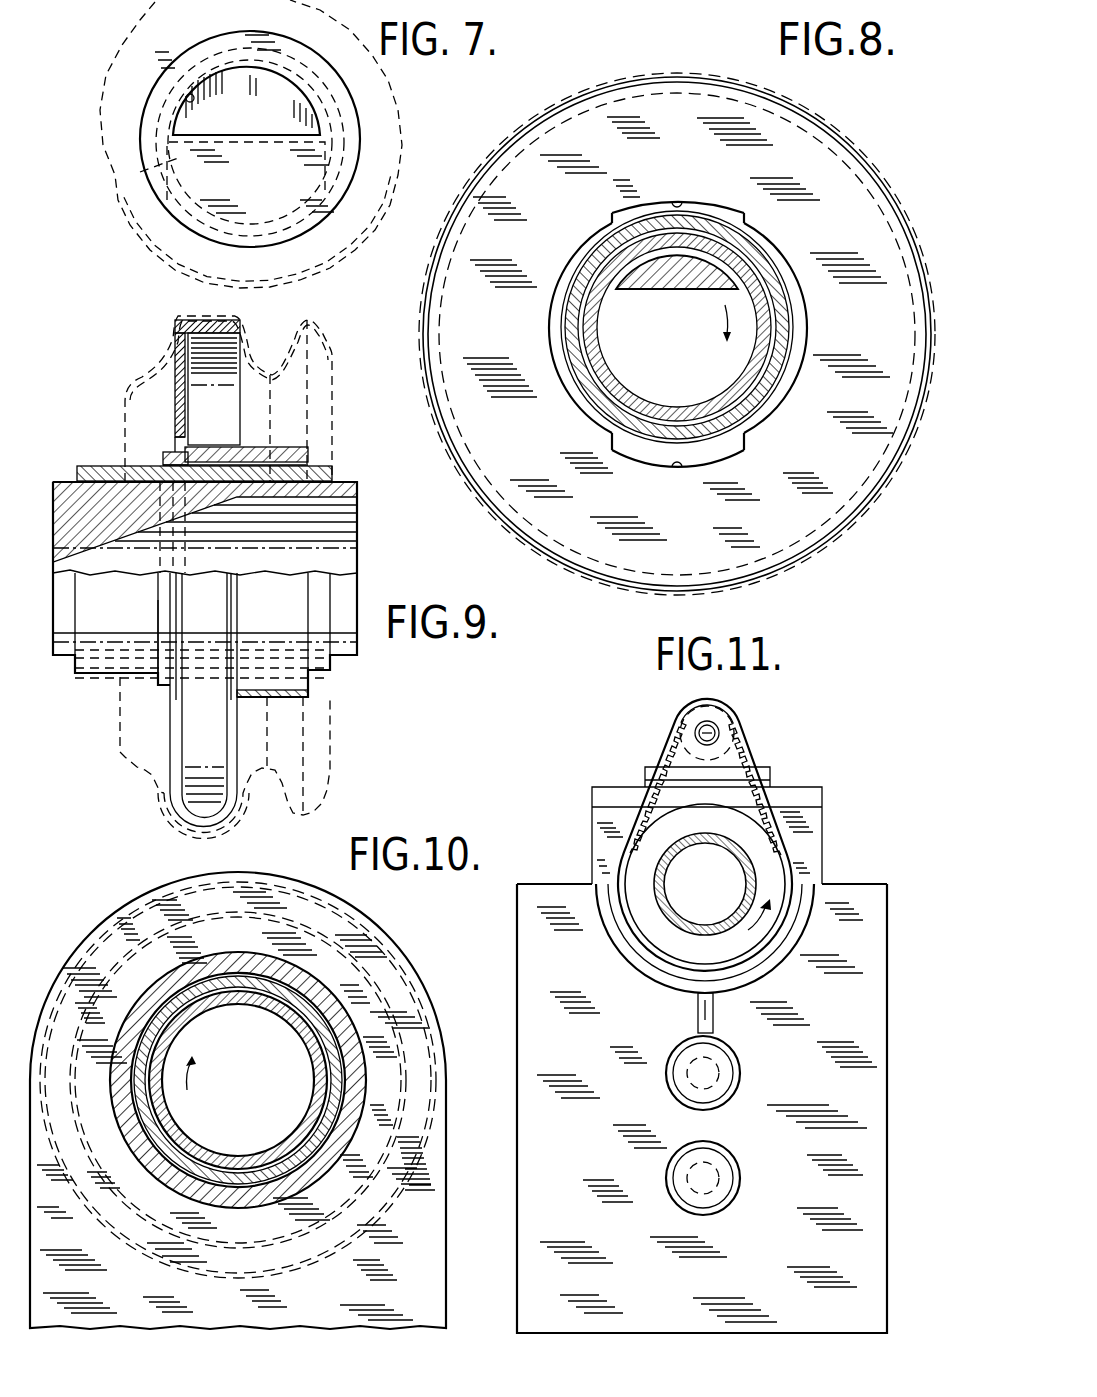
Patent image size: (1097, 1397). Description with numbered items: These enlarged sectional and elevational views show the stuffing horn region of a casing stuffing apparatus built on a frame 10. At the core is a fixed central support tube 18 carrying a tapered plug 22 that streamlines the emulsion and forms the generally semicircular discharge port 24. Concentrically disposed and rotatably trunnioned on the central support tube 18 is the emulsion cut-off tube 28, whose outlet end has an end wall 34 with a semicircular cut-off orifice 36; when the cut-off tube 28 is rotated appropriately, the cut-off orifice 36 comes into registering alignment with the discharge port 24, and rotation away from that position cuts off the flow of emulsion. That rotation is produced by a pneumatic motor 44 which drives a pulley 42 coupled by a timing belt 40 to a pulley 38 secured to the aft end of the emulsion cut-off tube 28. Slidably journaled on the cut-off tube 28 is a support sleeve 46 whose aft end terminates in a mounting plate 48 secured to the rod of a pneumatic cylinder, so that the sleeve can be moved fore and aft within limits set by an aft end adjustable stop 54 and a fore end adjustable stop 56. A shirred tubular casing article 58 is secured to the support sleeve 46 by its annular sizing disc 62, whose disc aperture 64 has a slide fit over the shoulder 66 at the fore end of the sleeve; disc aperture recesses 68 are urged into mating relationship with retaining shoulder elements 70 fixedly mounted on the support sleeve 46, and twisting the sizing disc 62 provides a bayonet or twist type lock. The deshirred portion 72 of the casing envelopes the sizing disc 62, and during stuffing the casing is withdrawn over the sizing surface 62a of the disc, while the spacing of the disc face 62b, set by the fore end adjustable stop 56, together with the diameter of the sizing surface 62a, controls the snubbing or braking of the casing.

In FIG. 11, the frame 10 is at (591, 1169).
In FIG. 7, the central support tube 18 is at (333, 168).
In FIG. 8, the central support tube 18 is at (668, 416).
In FIG. 9, the central support tube 18 is at (348, 490).
In FIG. 10, the central support tube 18 is at (313, 1051).
In FIG. 11, the central support tube 18 is at (662, 906).
In FIG. 7, the tapered plug 22 is at (258, 119).
In FIG. 8, the tapered plug 22 is at (668, 275).
In FIG. 9, the tapered plug 22 is at (207, 500).
In FIG. 7, the discharge port 24 is at (140, 172).
In FIG. 7, the emulsion cut-off tube 28 is at (177, 207).
In FIG. 8, the emulsion cut-off tube 28 is at (585, 268).
In FIG. 9, the emulsion cut-off tube 28 is at (330, 472).
In FIG. 10, the emulsion cut-off tube 28 is at (275, 1172).
In FIG. 7, the end wall 34 is at (258, 185).
In FIG. 7, the cut-off orifice 36 is at (187, 96).
In FIG. 11, the pulley 38 is at (770, 861).
In FIG. 11, the timing belt 40 is at (648, 810).
In FIG. 11, the pulley 42 is at (690, 729).
In FIG. 11, the pneumatic motor 44 is at (722, 768).
In FIG. 9, the support sleeve 46 is at (303, 457).
In FIG. 10, the support sleeve 46 is at (237, 963).
In FIG. 10, the mounting plate 48 is at (425, 1263).
In FIG. 11, the aft end adjustable stop 54 is at (725, 1073).
In FIG. 11, the fore end adjustable stop 56 is at (725, 1178).
In FIG. 7, the shirred tubular casing article 58 is at (358, 236).
In FIG. 8, the shirred tubular casing article 58 is at (577, 93).
In FIG. 9, the shirred tubular casing article 58 is at (333, 352).
In FIG. 10, the shirred tubular casing article 58 is at (120, 960).
In FIG. 8, the sizing disc 62 is at (668, 66).
In FIG. 9, the sizing disc 62 is at (165, 371).
In FIG. 8, the sizing surface 62a is at (867, 162).
In FIG. 9, the sizing surface 62a is at (203, 316).
In FIG. 8, the face 62b is at (852, 237).
In FIG. 9, the face 62b is at (175, 405).
In FIG. 8, the disc aperture 64 is at (583, 408).
In FIG. 8, the shoulder 66 is at (753, 412).
In FIG. 9, the shoulder 66 is at (165, 456).
In FIG. 8, the disc aperture recesses 68 is at (680, 201).
In FIG. 9, the disc aperture recesses 68 is at (188, 440).
In FIG. 8, the retaining shoulder elements 70 is at (548, 330).
In FIG. 9, the retaining shoulder elements 70 is at (163, 604).
In FIG. 7, the deshirred portion 72 is at (386, 108).
In FIG. 9, the deshirred portion 72 is at (120, 722).